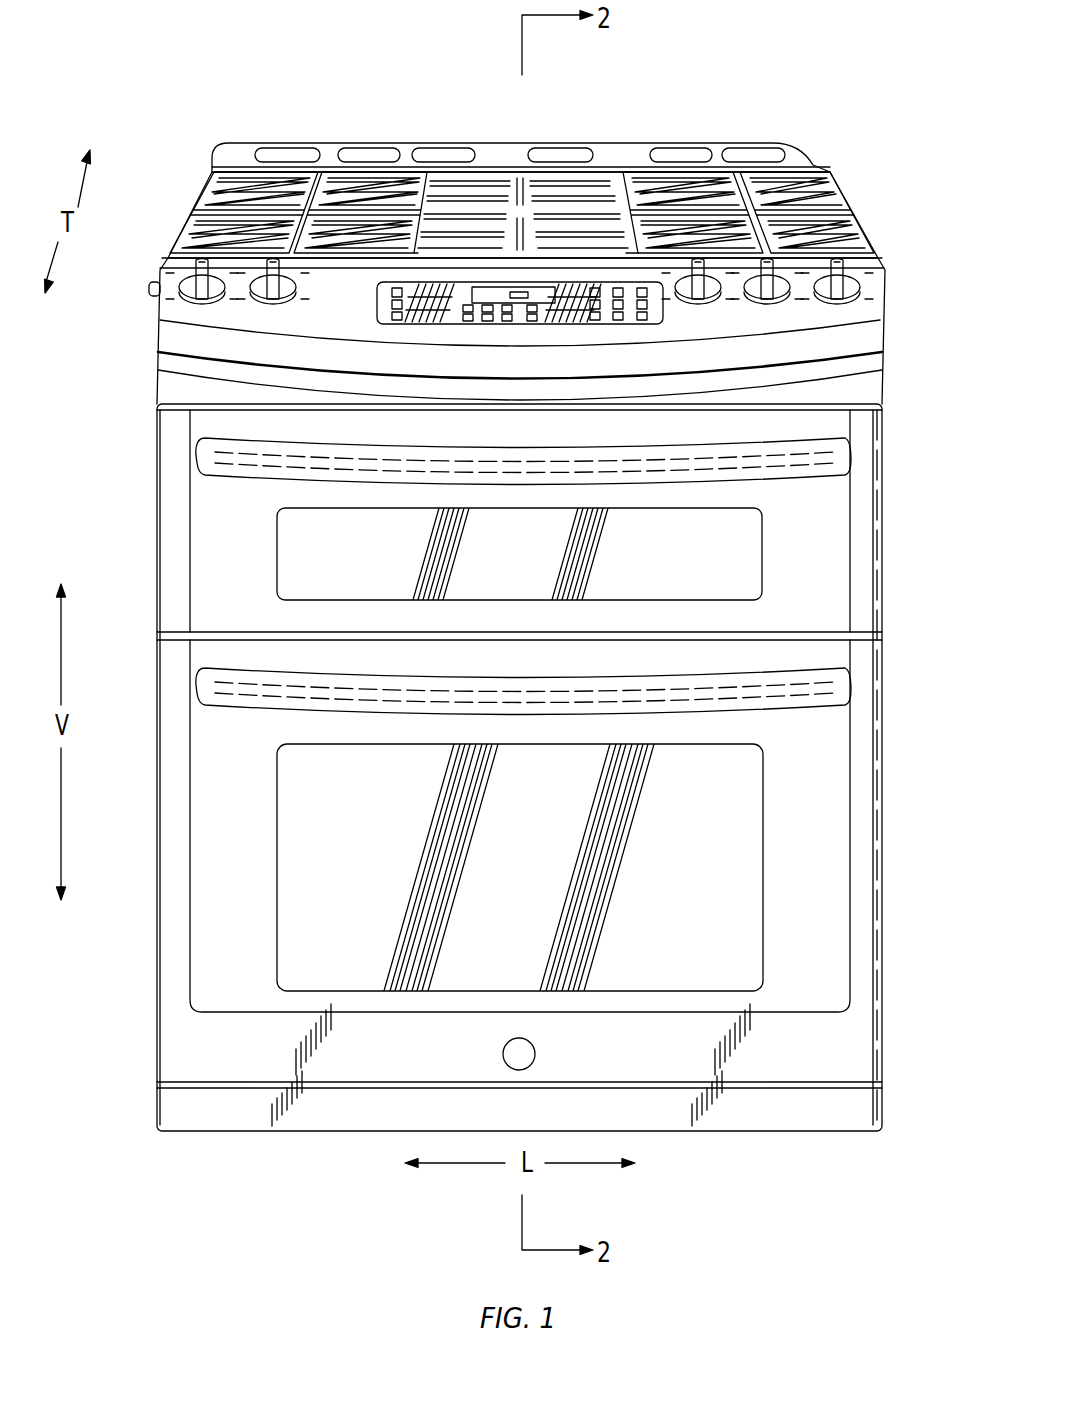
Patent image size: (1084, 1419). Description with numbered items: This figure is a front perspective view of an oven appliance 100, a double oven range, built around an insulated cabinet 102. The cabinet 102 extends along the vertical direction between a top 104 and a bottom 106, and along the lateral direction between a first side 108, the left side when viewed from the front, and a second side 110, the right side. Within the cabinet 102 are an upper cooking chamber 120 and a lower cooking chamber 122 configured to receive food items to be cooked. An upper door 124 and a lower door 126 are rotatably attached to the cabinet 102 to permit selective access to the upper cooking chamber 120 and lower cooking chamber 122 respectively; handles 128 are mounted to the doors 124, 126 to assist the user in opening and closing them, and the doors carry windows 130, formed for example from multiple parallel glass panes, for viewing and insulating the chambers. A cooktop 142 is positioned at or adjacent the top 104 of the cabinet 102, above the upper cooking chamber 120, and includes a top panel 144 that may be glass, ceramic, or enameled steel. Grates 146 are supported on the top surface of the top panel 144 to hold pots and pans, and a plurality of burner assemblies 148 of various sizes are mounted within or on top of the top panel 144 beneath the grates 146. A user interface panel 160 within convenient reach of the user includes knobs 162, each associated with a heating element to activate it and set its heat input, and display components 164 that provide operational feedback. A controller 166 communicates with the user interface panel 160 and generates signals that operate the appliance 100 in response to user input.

The oven appliance 100 is at (140, 128).
The cabinet 102 is at (862, 388).
The top 104 is at (142, 306).
The bottom 106 is at (142, 1121).
The first side 108 is at (142, 782).
The second side 110 is at (892, 811).
The upper cooking chamber 120 is at (826, 562).
The lower cooking chamber 122 is at (752, 873).
The upper door 124 is at (142, 610).
The lower door 126 is at (828, 783).
The handles 128 is at (827, 452).
The windows 130 is at (515, 590).
The cooktop 142 is at (821, 154).
The top panel 144 is at (857, 227).
The grates 146 is at (190, 213).
The burner assemblies 148 is at (318, 223).
The user interface panel 160 is at (362, 313).
The knobs 162 is at (268, 298).
The display components 164 is at (493, 297).
The controller 166 is at (577, 296).